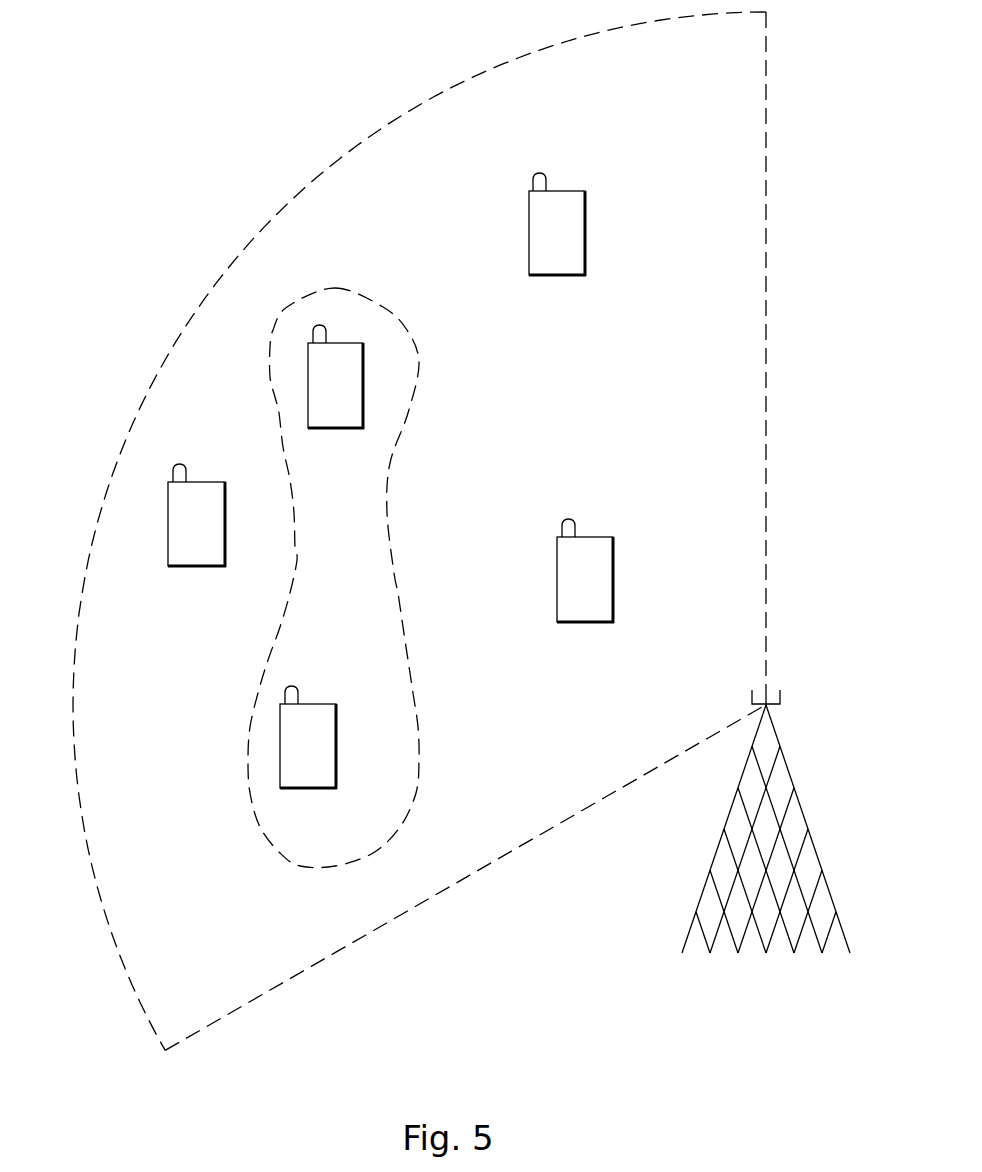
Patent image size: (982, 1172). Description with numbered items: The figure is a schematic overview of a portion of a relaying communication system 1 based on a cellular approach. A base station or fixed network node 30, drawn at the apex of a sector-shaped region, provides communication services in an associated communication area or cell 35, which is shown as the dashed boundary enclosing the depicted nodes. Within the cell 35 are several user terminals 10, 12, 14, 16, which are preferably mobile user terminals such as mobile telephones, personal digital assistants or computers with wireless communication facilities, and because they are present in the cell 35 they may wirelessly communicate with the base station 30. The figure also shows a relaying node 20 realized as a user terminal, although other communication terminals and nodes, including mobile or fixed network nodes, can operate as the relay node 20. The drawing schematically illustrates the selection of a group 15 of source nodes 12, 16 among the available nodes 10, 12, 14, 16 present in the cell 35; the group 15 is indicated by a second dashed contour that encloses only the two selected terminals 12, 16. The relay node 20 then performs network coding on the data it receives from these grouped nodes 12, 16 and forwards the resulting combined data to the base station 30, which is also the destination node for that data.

The relaying communication system 1 is at (206, 64).
The user terminal 10 is at (529, 236).
The user terminal 12 is at (308, 389).
The user terminal 14 is at (168, 527).
The group of source nodes 15 is at (420, 368).
The user terminal 16 is at (280, 749).
The relaying node 20 is at (613, 578).
The base station 30 is at (681, 950).
The communication area or cell 35 is at (247, 242).